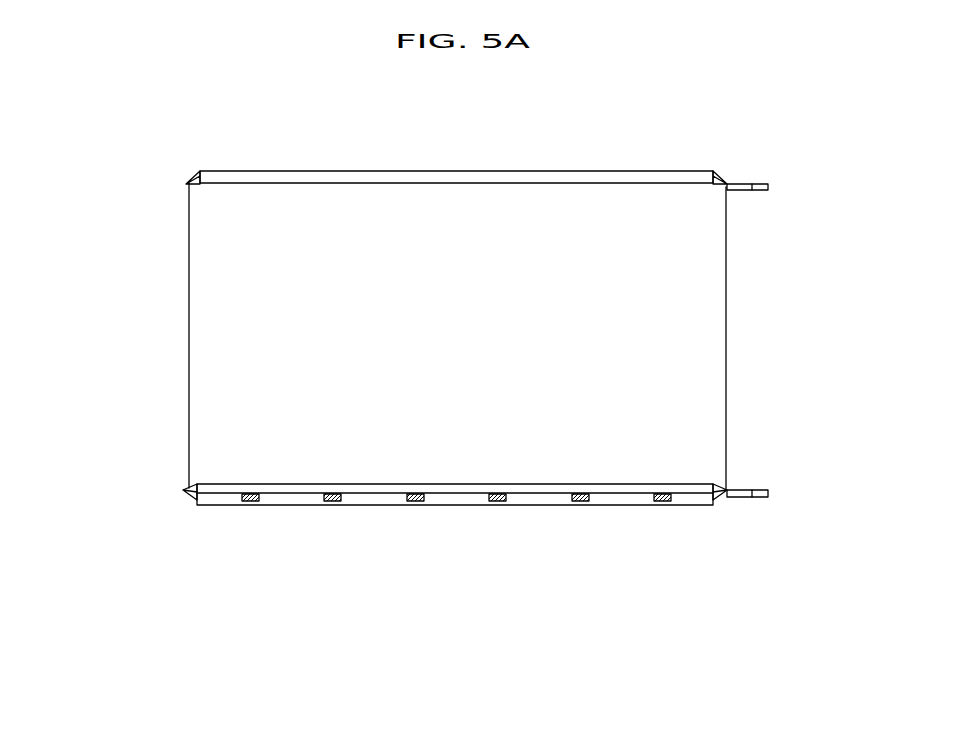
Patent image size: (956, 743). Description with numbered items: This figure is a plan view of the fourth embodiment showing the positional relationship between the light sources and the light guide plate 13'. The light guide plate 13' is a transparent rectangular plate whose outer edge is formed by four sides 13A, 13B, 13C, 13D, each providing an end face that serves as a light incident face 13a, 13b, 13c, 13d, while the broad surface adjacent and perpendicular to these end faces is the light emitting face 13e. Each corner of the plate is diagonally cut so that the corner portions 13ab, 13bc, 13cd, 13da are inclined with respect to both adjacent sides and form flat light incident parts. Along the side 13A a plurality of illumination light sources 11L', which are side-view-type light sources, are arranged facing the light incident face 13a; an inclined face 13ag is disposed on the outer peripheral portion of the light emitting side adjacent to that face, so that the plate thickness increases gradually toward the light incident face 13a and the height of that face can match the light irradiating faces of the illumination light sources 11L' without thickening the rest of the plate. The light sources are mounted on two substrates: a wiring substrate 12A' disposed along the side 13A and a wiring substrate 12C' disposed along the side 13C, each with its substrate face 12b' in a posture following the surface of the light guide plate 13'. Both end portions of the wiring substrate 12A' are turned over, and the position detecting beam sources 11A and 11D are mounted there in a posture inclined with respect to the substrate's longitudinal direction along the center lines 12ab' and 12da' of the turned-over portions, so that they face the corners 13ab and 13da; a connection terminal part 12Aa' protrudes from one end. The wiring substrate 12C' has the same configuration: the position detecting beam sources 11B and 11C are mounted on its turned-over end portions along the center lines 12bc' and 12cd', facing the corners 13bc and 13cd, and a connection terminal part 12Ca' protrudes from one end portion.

The side 13C is at (297, 181).
The light incident face 13c is at (383, 183).
The light guide plate substrate face 12b' is at (451, 340).
The light emitting face 13e is at (520, 232).
The wiring substrate 12C' is at (192, 147).
The light guide plate 13' is at (647, 146).
The center line of turned-over portion 12bc' is at (140, 193).
The corner portion 13bc is at (186, 178).
The position detecting beam source 11B is at (193, 185).
The center line of turned-over portion 12cd' is at (758, 169).
The corner portion 13cd is at (722, 183).
The position detecting beam source 11C is at (718, 189).
The connection terminal part 12Ca' is at (759, 209).
The side 13D is at (726, 315).
The light incident face 13d is at (726, 255).
The side 13B is at (189, 306).
The light incident face 13b is at (189, 372).
The side 13A is at (377, 505).
The light incident face 13a is at (540, 506).
The illumination light source 11L' is at (456, 461).
The inclined face 13ag is at (660, 494).
The wiring substrate 12A' is at (471, 469).
The position detecting beam source 11A is at (200, 485).
The position detecting beam source 11D is at (720, 489).
The center line of turned-over portion 12ab' is at (133, 493).
The corner portion 13ab is at (185, 500).
The center line of turned-over portion 12da' is at (758, 505).
The corner portion 13da is at (728, 505).
The connection terminal part 12Aa' is at (766, 465).